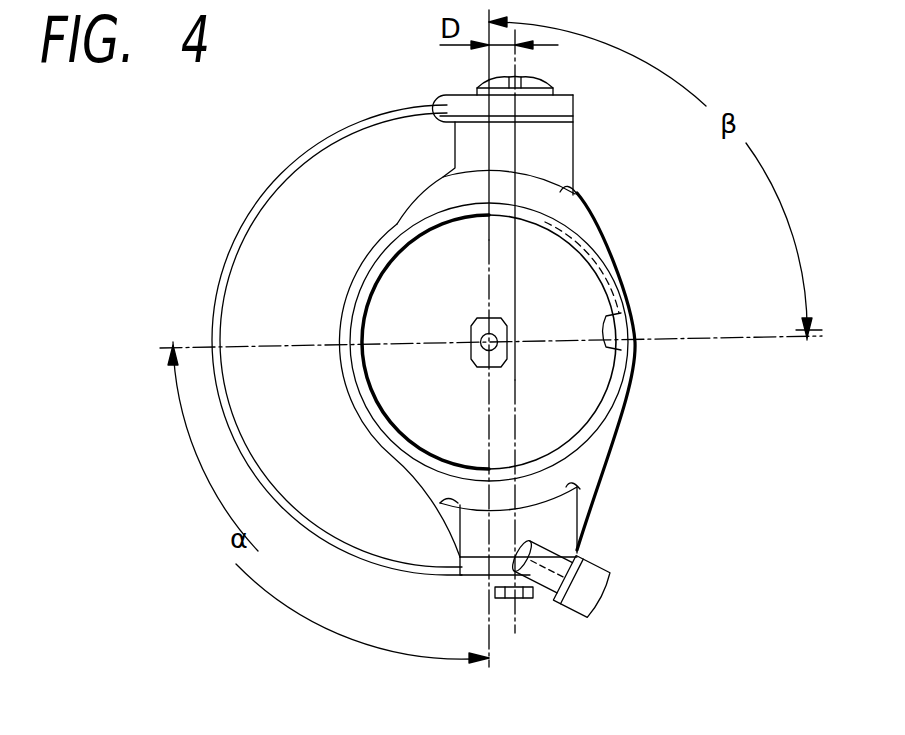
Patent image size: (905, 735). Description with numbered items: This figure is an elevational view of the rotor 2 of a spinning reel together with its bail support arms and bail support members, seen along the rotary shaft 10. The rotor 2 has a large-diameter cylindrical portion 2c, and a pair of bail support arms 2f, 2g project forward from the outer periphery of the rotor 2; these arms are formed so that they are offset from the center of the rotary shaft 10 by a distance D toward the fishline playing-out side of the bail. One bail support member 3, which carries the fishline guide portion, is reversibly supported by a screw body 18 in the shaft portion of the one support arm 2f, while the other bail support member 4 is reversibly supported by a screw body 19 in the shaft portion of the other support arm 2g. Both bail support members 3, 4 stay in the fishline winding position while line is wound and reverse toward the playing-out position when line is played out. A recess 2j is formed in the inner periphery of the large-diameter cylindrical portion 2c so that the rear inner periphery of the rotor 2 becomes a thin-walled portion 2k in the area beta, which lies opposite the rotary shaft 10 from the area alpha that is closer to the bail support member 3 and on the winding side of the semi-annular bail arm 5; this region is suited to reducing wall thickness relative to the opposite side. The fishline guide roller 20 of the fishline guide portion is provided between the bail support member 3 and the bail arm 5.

The rotor 2 is at (630, 391).
The large-diameter cylindrical portion 2c is at (363, 283).
The support arm 2f is at (565, 515).
The support arm 2g is at (455, 150).
The recess 2j is at (622, 344).
The thin-walled portion 2k is at (620, 292).
The bail support member 3 is at (480, 588).
The bail support member 4 is at (440, 100).
The bail arm 5 is at (217, 270).
The rotary shaft 10 is at (478, 325).
The screw body 18 is at (508, 600).
The screw body 19 is at (538, 80).
The fishline guide roller 20 is at (575, 575).